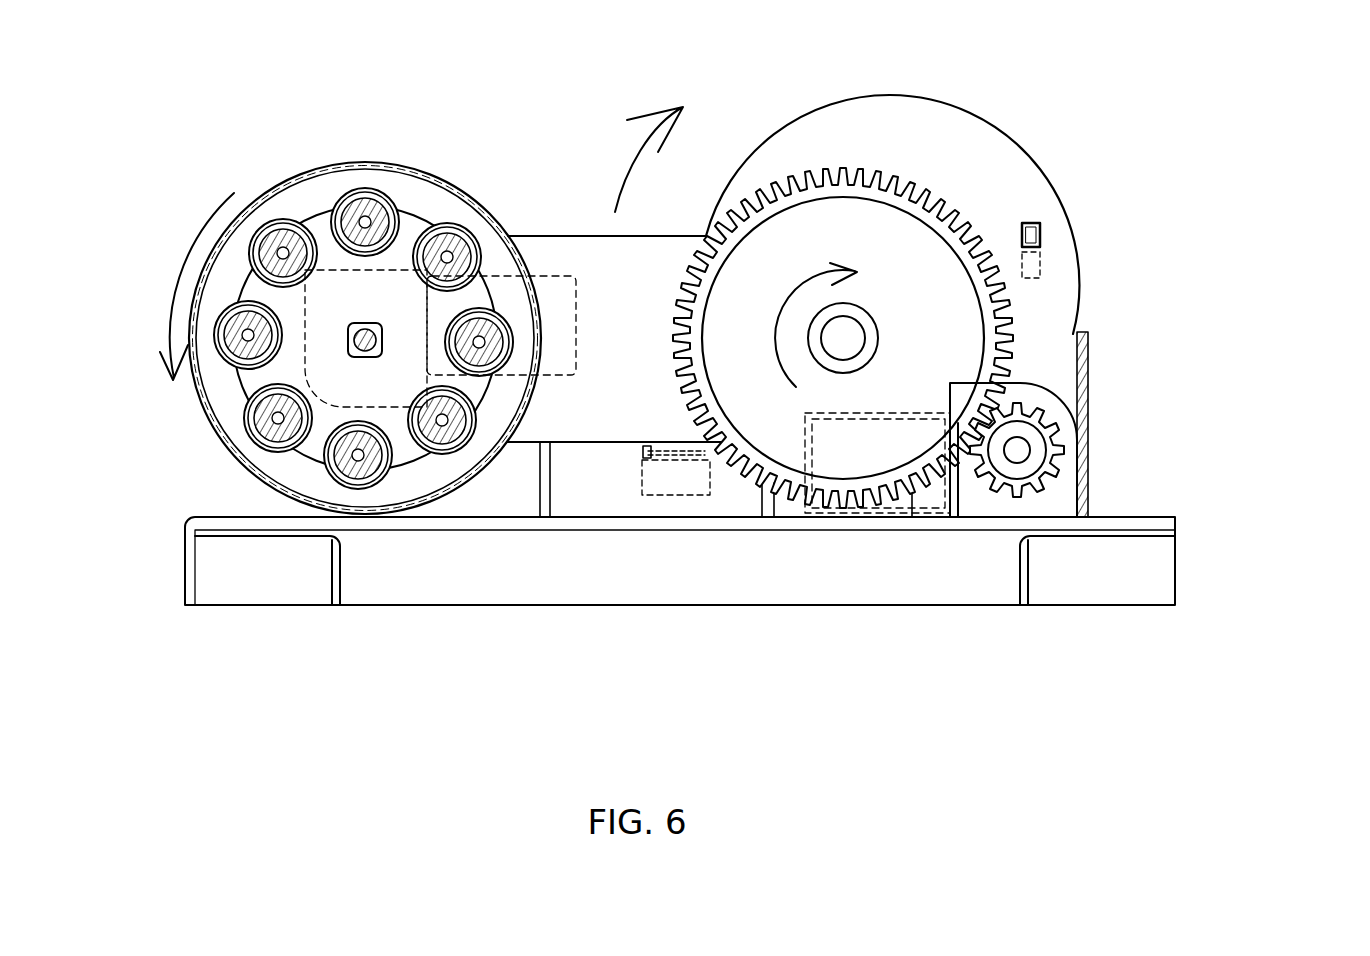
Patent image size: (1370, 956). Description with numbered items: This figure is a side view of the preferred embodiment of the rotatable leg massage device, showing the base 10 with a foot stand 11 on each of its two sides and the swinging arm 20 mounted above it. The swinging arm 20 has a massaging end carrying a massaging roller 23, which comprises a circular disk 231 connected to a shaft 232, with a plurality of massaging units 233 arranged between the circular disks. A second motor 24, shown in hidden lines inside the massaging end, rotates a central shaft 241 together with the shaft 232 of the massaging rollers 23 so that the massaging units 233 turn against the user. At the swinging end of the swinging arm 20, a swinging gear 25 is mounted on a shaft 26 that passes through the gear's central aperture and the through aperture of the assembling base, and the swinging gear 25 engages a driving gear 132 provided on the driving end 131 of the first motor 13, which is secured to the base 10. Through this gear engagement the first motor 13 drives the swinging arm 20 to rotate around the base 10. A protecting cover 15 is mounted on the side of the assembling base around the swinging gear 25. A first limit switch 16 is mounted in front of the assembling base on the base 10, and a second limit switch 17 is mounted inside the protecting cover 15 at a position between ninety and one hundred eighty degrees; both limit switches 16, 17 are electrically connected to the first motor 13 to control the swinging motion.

The base 10 is at (1200, 519).
The foot stand 11 is at (1135, 567).
The first motor 13 is at (851, 455).
The driving end 131 is at (1055, 403).
The driving gear 132 is at (1037, 438).
The protecting cover 15 is at (965, 142).
The first limit switch 16 is at (648, 496).
The second limit switch 17 is at (1033, 233).
The swinging arm 20 is at (578, 218).
The massaging roller 23 is at (313, 158).
The circular disk 231 is at (360, 322).
The shaft 232 is at (347, 348).
The massaging unit 233 is at (444, 240).
The second motor 24 is at (541, 290).
The central shaft 241 is at (282, 255).
The swinging gear 25 is at (962, 215).
The shaft 26 is at (847, 336).